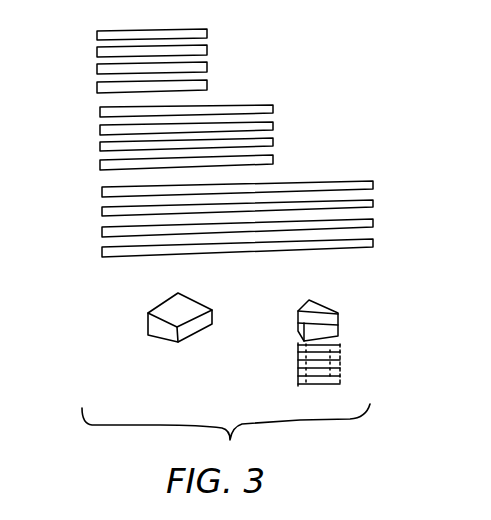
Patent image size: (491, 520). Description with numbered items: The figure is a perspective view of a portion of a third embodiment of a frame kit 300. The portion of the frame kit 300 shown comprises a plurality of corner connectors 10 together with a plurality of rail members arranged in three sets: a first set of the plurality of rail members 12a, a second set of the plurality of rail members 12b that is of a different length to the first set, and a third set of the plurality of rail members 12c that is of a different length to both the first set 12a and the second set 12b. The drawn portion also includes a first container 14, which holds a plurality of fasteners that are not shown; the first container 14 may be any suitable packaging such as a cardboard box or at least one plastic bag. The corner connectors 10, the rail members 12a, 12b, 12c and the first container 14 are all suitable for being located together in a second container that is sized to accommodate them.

The first set of the plurality of rail members 12a is at (92, 30).
The second set of the plurality of rail members 12b is at (96, 108).
The third set of the plurality of rail members 12c is at (96, 188).
The first container 14 is at (148, 325).
The corner connectors 10 is at (294, 344).
The frame kit 300 is at (236, 438).